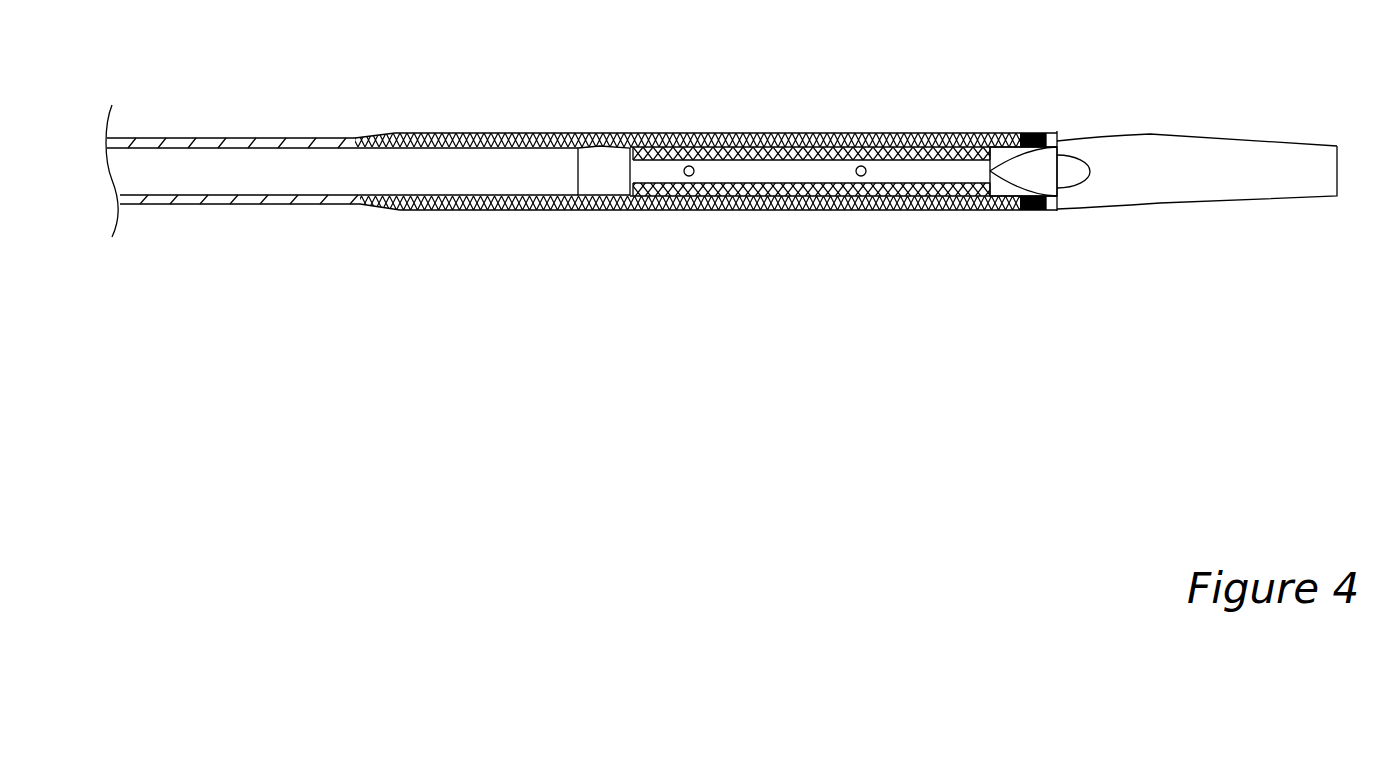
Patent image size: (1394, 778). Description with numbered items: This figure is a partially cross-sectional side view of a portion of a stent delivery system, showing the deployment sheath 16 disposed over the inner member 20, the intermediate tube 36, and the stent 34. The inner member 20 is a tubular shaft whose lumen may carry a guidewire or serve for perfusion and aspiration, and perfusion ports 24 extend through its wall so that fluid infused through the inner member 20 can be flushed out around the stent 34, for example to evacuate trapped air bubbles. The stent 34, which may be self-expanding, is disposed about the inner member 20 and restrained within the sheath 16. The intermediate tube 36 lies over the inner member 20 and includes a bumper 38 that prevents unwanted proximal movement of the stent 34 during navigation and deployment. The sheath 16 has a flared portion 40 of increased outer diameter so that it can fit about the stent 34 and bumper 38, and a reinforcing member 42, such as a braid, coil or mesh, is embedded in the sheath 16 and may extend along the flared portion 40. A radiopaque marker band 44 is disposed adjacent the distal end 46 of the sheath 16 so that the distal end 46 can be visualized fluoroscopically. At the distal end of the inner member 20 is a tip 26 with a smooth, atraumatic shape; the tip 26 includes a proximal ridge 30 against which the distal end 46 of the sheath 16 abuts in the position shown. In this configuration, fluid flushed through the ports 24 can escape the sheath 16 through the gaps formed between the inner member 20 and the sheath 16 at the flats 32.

The deployment sheath 16 is at (303, 124).
The inner member 20 is at (720, 170).
The perfusion ports 24 is at (861, 177).
The tip 26 is at (1231, 124).
The proximal ridge 30 is at (1073, 140).
The flats 32 is at (1072, 172).
The stent 34 is at (948, 133).
The intermediate tube 36 is at (220, 167).
The bumper 38 is at (603, 158).
The flared portion 40 is at (782, 133).
The reinforcing member 42 is at (867, 133).
The marker band 44 is at (1035, 132).
The distal end 46 is at (1055, 133).